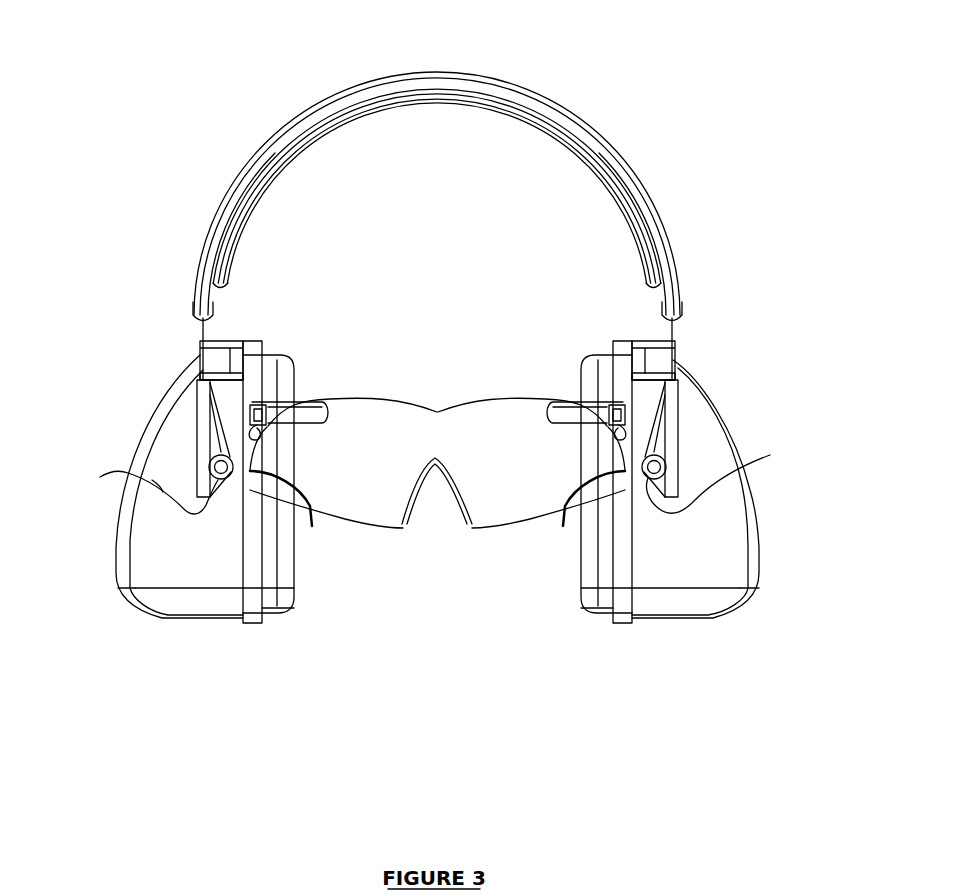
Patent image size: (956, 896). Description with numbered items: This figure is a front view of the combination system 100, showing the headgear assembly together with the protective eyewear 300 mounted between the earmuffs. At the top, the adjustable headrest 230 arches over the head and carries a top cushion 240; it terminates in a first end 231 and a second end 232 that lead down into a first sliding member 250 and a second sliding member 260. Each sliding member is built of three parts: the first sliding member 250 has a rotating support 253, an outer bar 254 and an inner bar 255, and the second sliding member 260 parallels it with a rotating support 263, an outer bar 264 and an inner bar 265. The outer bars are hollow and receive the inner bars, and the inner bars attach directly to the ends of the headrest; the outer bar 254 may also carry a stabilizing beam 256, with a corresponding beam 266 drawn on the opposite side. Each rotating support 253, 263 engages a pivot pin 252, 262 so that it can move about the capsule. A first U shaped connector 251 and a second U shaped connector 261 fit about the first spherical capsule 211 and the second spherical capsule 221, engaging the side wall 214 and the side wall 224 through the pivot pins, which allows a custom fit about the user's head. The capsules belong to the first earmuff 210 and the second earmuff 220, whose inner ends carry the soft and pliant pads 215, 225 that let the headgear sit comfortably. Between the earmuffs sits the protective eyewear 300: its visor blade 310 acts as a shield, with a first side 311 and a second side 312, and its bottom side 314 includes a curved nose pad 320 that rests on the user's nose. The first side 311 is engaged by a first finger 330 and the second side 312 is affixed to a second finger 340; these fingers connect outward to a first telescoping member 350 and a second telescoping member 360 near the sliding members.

The combination system 100 is at (440, 72).
The adjustable headrest 230 is at (532, 92).
The top cushion 240 is at (566, 141).
The first end 231 is at (680, 320).
The second end 232 is at (195, 322).
The first earmuff 210 is at (682, 601).
The second earmuff 220 is at (193, 601).
The first spherical capsule 211 is at (759, 527).
The second spherical capsule 221 is at (117, 547).
The side wall 214 is at (734, 486).
The side wall 224 is at (102, 480).
The soft and pliant pad 215 is at (590, 573).
The soft and pliant pad 225 is at (288, 560).
The first U shaped connector 251 is at (673, 333).
The second U shaped connector 261 is at (200, 342).
The inner bar 255 is at (672, 368).
The inner bar 265 is at (201, 369).
The first sliding member 250 is at (671, 412).
The second sliding member 260 is at (205, 412).
The outer bar 254 is at (671, 437).
The outer bar 264 is at (204, 446).
The rotating support 253 is at (770, 456).
The rotating support 263 is at (163, 493).
The pivot pin 252 is at (654, 483).
The pivot pin 262 is at (221, 483).
The protective eyewear 300 is at (444, 455).
The visor blade 310 is at (388, 508).
The first side 311 is at (565, 505).
The second side 312 is at (433, 408).
The bottom side 314 is at (474, 542).
The curved nose pad 320 is at (422, 530).
The first finger 330 is at (562, 410).
The second finger 340 is at (305, 410).
The first telescoping member 350 is at (608, 375).
The stabilizing beam 256 is at (640, 375).
The stabilizing beam 266 is at (270, 355).
The second telescoping member 360 is at (265, 368).